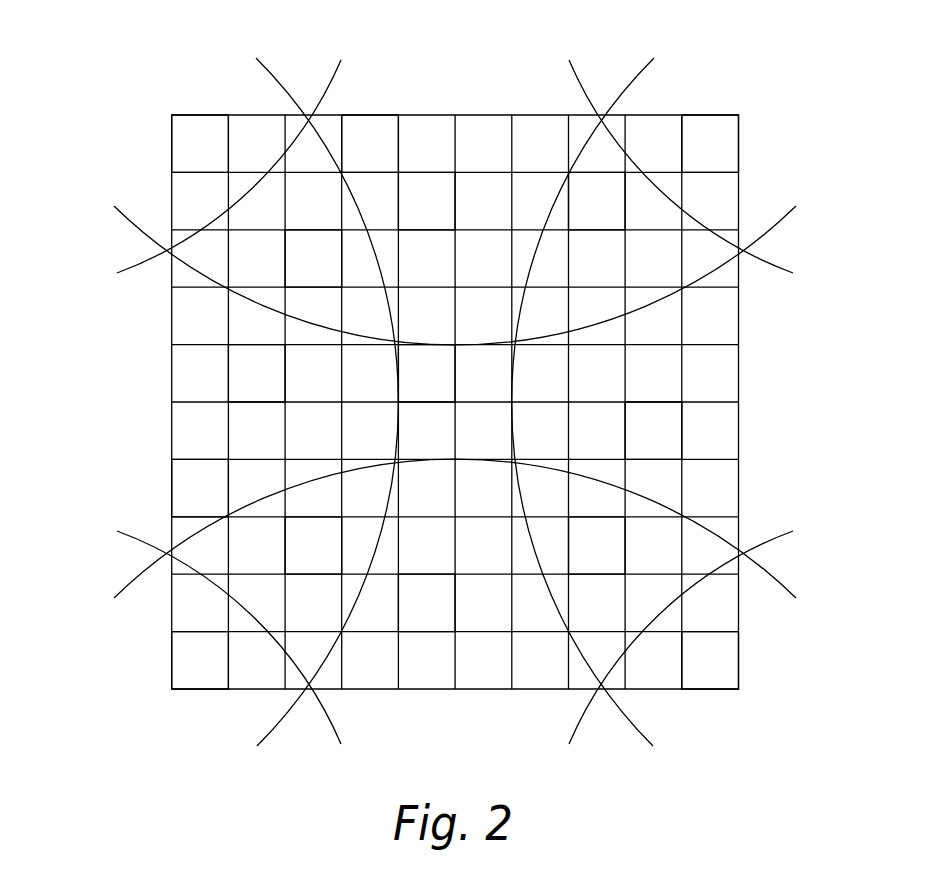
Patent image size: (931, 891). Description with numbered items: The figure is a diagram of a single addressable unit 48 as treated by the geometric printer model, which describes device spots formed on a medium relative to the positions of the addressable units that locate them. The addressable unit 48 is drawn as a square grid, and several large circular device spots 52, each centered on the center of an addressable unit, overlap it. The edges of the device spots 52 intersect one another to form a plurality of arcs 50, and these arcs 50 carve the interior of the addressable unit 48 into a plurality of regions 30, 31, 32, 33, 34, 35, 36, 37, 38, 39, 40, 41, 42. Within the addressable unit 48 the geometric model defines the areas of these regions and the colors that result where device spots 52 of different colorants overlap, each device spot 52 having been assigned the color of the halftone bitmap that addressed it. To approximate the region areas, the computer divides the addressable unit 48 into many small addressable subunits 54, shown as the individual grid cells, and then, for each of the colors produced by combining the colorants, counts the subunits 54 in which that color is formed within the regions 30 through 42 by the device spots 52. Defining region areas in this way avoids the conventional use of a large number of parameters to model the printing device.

The region 30 is at (186, 158).
The region 31 is at (299, 273).
The region 32 is at (413, 216).
The region 33 is at (583, 216).
The region 34 is at (696, 158).
The region 35 is at (243, 388).
The region 36 is at (413, 388).
The region 37 is at (639, 445).
The region 38 is at (186, 675).
The region 39 is at (299, 560).
The region 40 is at (413, 618).
The region 41 is at (583, 560).
The region 42 is at (696, 675).
The addressable unit 48 is at (145, 393).
The arc 50 is at (133, 217).
The device spot 52 is at (237, 78).
The addressable subunit 54 is at (367, 125).